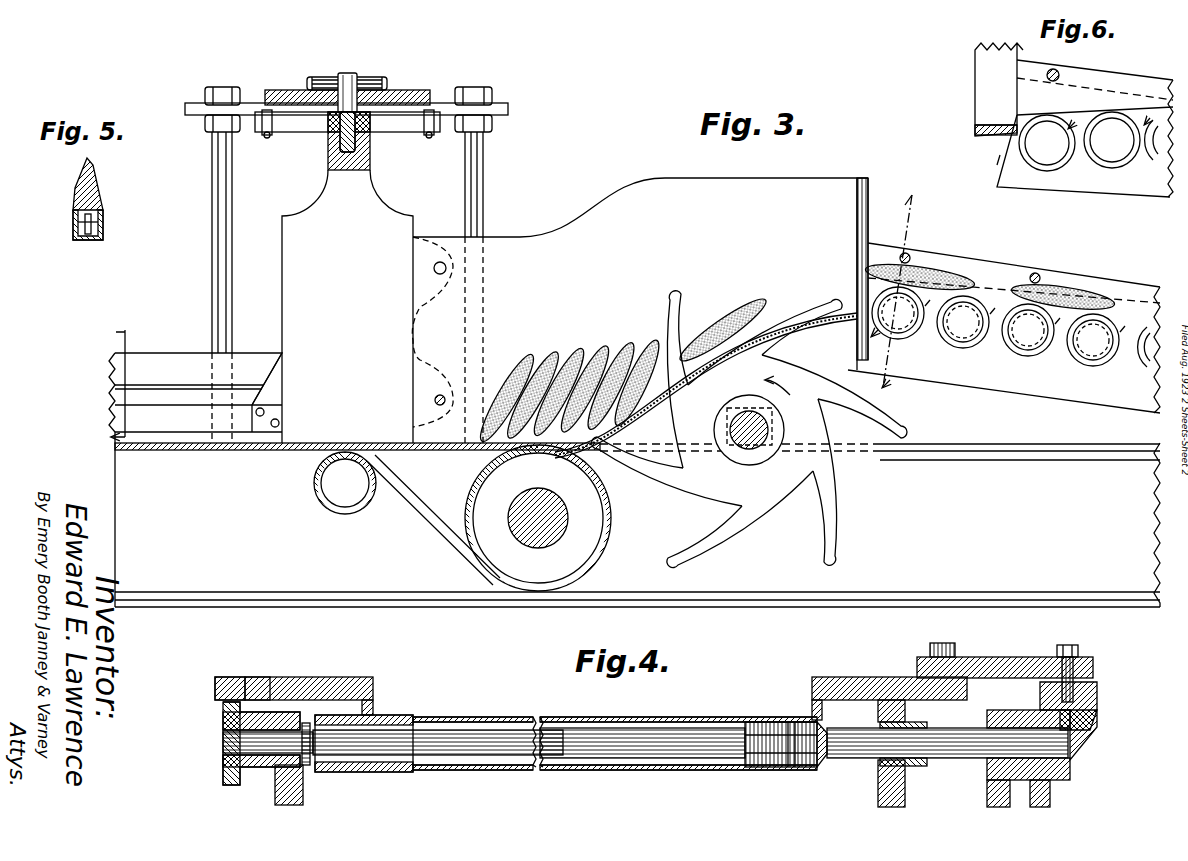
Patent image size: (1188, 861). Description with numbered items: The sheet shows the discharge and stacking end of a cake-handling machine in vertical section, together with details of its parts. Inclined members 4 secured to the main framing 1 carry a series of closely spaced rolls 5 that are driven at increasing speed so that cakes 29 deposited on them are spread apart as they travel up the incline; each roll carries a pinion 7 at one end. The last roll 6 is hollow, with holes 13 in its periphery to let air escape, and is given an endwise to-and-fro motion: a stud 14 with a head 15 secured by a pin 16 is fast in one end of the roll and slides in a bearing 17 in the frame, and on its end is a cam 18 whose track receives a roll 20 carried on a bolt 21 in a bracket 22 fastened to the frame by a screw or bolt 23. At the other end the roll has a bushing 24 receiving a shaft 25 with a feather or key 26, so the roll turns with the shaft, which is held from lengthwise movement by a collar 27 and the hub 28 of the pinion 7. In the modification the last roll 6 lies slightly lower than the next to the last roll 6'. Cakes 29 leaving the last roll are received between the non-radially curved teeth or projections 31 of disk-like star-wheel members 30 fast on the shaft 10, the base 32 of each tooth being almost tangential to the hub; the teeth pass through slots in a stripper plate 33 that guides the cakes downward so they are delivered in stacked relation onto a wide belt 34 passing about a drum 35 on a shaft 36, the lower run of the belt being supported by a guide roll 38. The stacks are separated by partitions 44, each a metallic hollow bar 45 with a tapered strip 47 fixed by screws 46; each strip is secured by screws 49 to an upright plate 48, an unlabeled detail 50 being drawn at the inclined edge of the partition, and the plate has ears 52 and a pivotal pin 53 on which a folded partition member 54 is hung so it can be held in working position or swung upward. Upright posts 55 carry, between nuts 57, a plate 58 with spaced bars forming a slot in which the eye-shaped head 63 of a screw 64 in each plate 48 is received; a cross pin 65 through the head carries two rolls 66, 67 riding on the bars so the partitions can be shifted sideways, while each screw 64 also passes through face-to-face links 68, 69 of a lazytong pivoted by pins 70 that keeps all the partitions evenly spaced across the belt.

In FIG. 4, the main framing 1 is at (283, 680).
In FIG. 3, the inclined member 4 is at (901, 290).
In FIG. 3, the series of rolls 5 is at (1120, 378).
In FIG. 3, the last roll 6 is at (1011, 310).
In FIG. 6, the last roll 6 is at (1036, 153).
In FIG. 4, the last roll 6 is at (642, 718).
In FIG. 6, the next to the last roll 6' is at (1121, 151).
In FIG. 4, the pinion 7 is at (222, 713).
In FIG. 3, the shaft 10 is at (738, 425).
In FIG. 4, the holes 13 is at (430, 716).
In FIG. 4, the stud 14 is at (858, 745).
In FIG. 4, the head 15 is at (775, 760).
In FIG. 4, the pin 16 is at (785, 716).
In FIG. 4, the bearing 17 is at (915, 760).
In FIG. 4, the cam 18 is at (1098, 712).
In FIG. 4, the roll 20 is at (1098, 684).
In FIG. 4, the bolt 21 is at (1076, 660).
In FIG. 4, the bracket 22 is at (1005, 657).
In FIG. 4, the screw or bolt 23 is at (938, 643).
In FIG. 4, the bushing 24 is at (388, 716).
In FIG. 4, the shaft 25 is at (365, 752).
In FIG. 4, the feather or key 26 is at (265, 677).
In FIG. 4, the collar 27 is at (308, 722).
In FIG. 4, the hub 28 is at (243, 677).
In FIG. 3, the cakes 29 is at (590, 360).
In FIG. 3, the disk-like member 30 is at (792, 405).
In FIG. 3, the teeth or projections 31 is at (680, 318).
In FIG. 3, the base 32 is at (772, 363).
In FIG. 3, the stripper plate 33 is at (838, 308).
In FIG. 3, the wide belt 34 is at (372, 445).
In FIG. 3, the drum 35 is at (600, 515).
In FIG. 3, the shaft 36 is at (535, 490).
In FIG. 3, the guide roll 38 is at (313, 489).
In FIG. 3, the partitions 44 is at (160, 365).
In FIG. 5, the metallic hollow bar 45 is at (103, 225).
In FIG. 5, the screws 46 is at (75, 221).
In FIG. 5, the strips 47 is at (98, 178).
In FIG. 3, the upright plate 48 is at (290, 264).
In FIG. 3, the screws 49 is at (264, 412).
In FIG. 3, the inclined guide 50 is at (272, 378).
In FIG. 3, the ears 52 is at (430, 245).
In FIG. 3, the pivotal pin 53 is at (446, 268).
In FIG. 3, the partition member 54 is at (625, 193).
In FIG. 3, the upright posts or bolts 55 is at (212, 195).
In FIG. 3, the nuts 57 is at (222, 87).
In FIG. 3, the plate 58 is at (440, 103).
In FIG. 3, the head 63 is at (368, 88).
In FIG. 3, the screw 64 is at (370, 135).
In FIG. 3, the cross pin 65 is at (318, 80).
In FIG. 3, the roll 66 is at (325, 78).
In FIG. 3, the roll 67 is at (350, 80).
In FIG. 3, the link 68 is at (310, 132).
In FIG. 3, the link 69 is at (290, 132).
In FIG. 3, the pins 70 is at (266, 135).